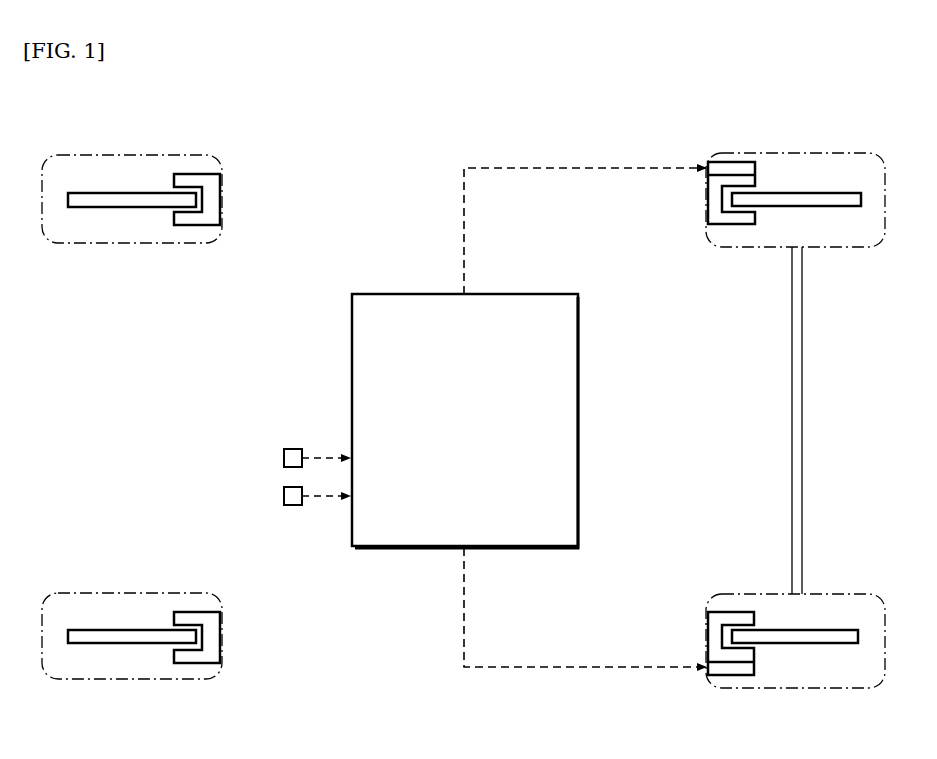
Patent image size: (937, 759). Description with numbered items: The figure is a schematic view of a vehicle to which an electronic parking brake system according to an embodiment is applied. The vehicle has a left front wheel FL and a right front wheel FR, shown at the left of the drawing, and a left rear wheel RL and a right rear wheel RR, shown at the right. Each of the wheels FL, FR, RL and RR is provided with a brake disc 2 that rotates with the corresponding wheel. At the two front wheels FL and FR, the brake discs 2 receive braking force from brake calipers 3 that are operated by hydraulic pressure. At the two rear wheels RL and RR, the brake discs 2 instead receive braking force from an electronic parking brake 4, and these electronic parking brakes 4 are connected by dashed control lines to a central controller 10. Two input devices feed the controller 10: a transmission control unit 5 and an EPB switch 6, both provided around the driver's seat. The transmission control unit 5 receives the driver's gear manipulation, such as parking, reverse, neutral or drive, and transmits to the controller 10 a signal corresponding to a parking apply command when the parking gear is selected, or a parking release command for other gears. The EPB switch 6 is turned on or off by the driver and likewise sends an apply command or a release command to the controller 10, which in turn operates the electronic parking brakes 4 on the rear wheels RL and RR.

The brake disc 2 is at (87, 193).
The brake caliper 3 is at (185, 174).
The electronic parking brake (EPB) 4 is at (708, 210).
The transmission control unit (TCU) 5 is at (284, 458).
The EPB switch 6 is at (284, 496).
The controller 10 is at (545, 294).
The right front wheel FR is at (124, 155).
The left front wheel FL is at (120, 680).
The right rear wheel RR is at (795, 153).
The left rear wheel RL is at (795, 689).